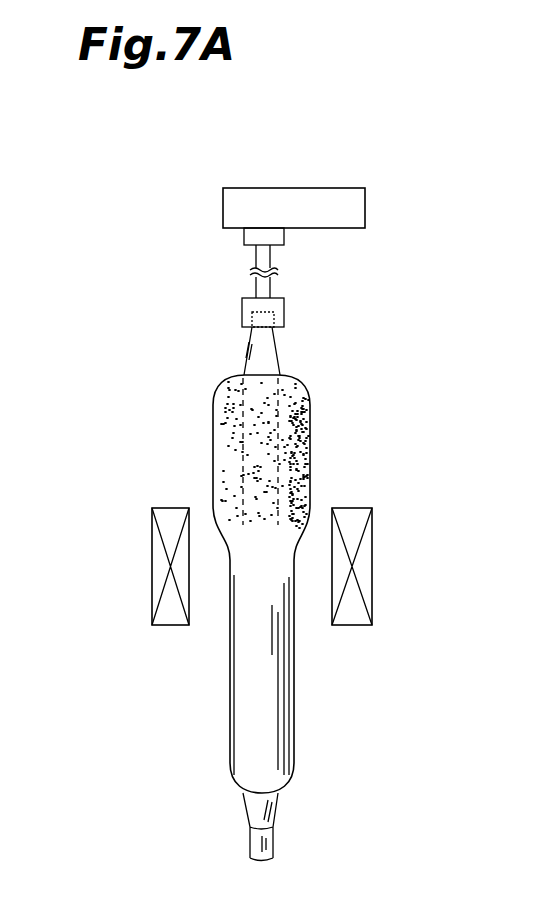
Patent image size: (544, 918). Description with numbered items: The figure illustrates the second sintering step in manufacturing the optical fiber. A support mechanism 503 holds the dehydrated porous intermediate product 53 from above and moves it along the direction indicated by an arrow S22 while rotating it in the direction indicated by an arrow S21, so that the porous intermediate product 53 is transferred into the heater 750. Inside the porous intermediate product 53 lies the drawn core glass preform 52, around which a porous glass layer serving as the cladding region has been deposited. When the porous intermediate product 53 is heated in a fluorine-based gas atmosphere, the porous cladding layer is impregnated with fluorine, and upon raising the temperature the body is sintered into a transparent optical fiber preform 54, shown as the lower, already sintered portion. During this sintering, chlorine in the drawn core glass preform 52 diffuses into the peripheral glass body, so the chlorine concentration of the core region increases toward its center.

The support mechanism 503 is at (322, 188).
The arrow indicating movement direction S22 is at (422, 170).
The arrow indicating rotation direction S21 is at (280, 342).
The drawn core glass preform 52 is at (313, 458).
The porous intermediate product 53 is at (206, 385).
The optical fiber preform 54 is at (302, 655).
The heater 750 is at (152, 558).